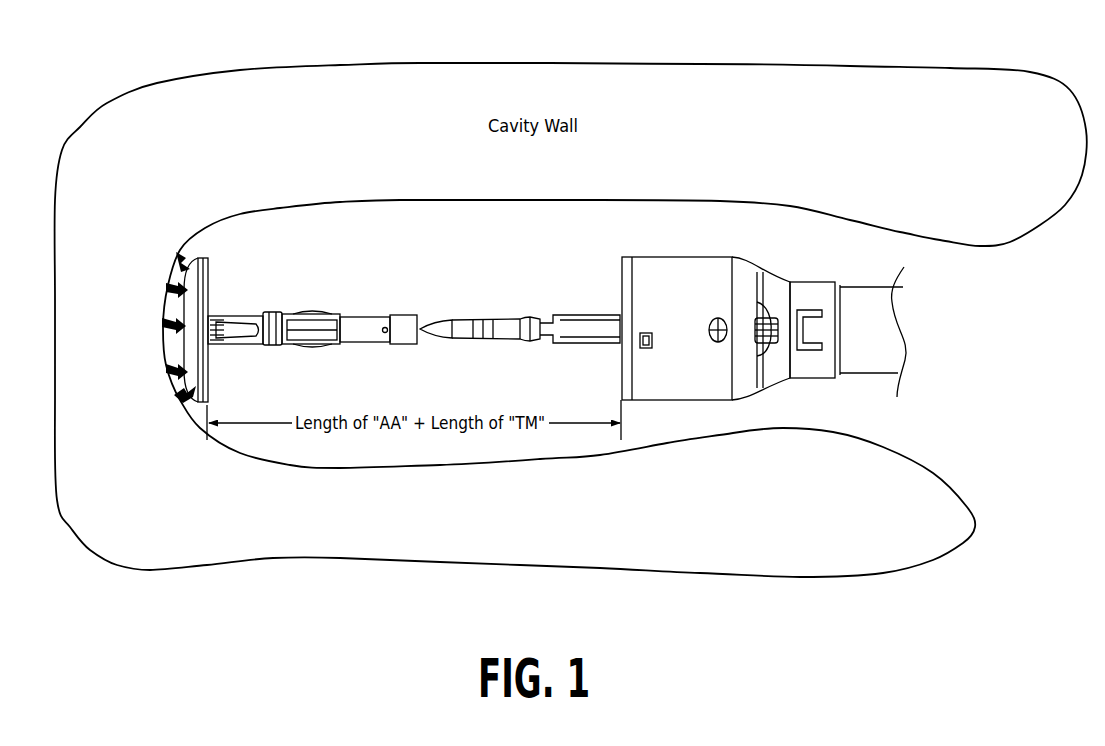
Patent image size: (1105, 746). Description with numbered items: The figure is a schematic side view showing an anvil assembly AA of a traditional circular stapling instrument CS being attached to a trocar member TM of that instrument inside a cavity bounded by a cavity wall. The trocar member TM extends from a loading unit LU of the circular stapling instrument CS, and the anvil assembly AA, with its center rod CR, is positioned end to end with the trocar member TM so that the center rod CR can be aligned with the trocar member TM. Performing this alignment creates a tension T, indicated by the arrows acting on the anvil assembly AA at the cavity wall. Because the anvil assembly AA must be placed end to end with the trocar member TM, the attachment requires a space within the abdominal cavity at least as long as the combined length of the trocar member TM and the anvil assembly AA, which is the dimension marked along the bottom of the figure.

The tension T is at (147, 327).
The anvil assembly AA is at (240, 217).
The center rod CR is at (330, 300).
The trocar member TM is at (502, 348).
The loading unit LU is at (727, 243).
The circular stapling instrument CS is at (876, 238).